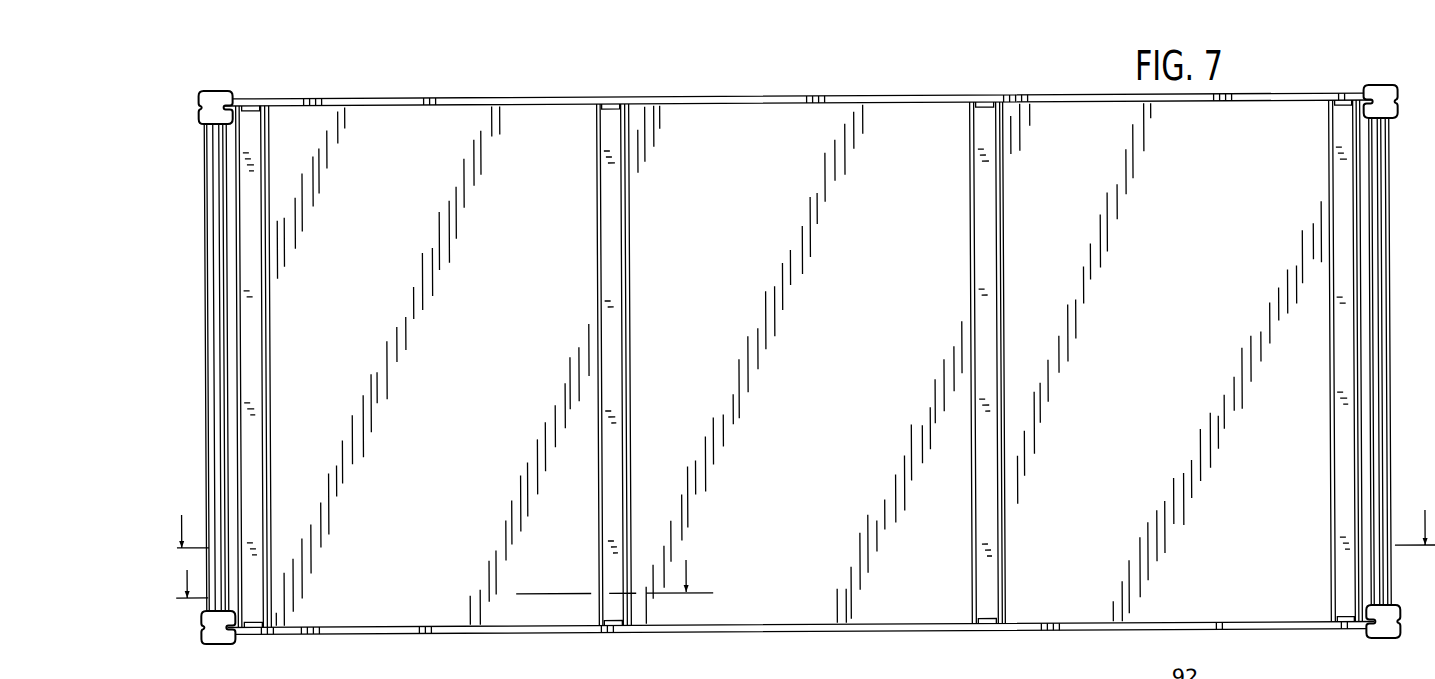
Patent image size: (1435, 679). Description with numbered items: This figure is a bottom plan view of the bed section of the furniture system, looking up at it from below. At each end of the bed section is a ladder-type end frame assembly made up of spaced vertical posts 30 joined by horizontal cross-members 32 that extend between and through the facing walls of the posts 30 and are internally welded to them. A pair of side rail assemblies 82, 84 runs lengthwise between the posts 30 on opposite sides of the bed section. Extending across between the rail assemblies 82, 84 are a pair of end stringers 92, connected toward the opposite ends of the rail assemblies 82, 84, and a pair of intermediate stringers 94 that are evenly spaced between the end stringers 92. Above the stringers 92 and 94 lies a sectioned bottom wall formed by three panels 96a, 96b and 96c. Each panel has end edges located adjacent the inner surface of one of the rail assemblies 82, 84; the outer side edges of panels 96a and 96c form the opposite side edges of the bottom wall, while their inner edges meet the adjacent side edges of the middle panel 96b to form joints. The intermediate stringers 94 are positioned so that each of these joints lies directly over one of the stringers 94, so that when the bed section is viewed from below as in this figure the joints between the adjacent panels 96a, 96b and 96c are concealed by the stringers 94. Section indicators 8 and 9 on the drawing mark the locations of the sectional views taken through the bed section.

The vertical post 30 is at (230, 82).
The horizontal cross-member 32 is at (208, 319).
The side rail assembly 82 is at (824, 97).
The side rail assembly 84 is at (804, 633).
The end stringer 92 is at (276, 373).
The intermediate stringer 94 is at (636, 395).
The panel 96a is at (479, 394).
The panel 96b is at (839, 396).
The panel 96c is at (1189, 359).
The section line 8 is at (805, 553).
The section line 9 is at (614, 578).